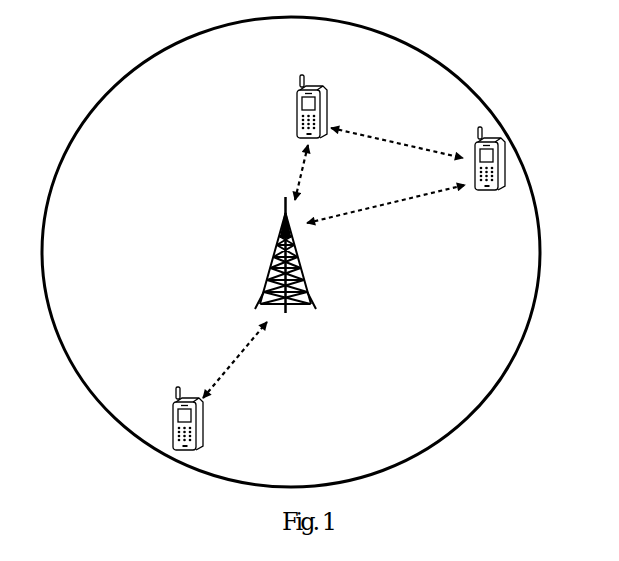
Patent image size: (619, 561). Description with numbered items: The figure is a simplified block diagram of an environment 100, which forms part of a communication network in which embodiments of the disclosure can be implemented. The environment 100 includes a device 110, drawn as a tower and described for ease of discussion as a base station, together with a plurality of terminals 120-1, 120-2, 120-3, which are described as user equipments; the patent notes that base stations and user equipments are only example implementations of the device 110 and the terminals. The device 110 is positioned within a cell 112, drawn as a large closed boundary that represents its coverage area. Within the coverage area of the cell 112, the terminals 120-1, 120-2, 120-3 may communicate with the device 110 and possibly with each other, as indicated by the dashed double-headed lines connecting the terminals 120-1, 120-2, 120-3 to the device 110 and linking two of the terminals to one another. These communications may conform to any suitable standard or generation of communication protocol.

The environment 100 is at (98, 70).
The device 110 is at (298, 268).
The cell 112 is at (449, 77).
The terminal 120-1 is at (323, 99).
The terminal 120-2 is at (506, 168).
The terminal 120-3 is at (205, 430).